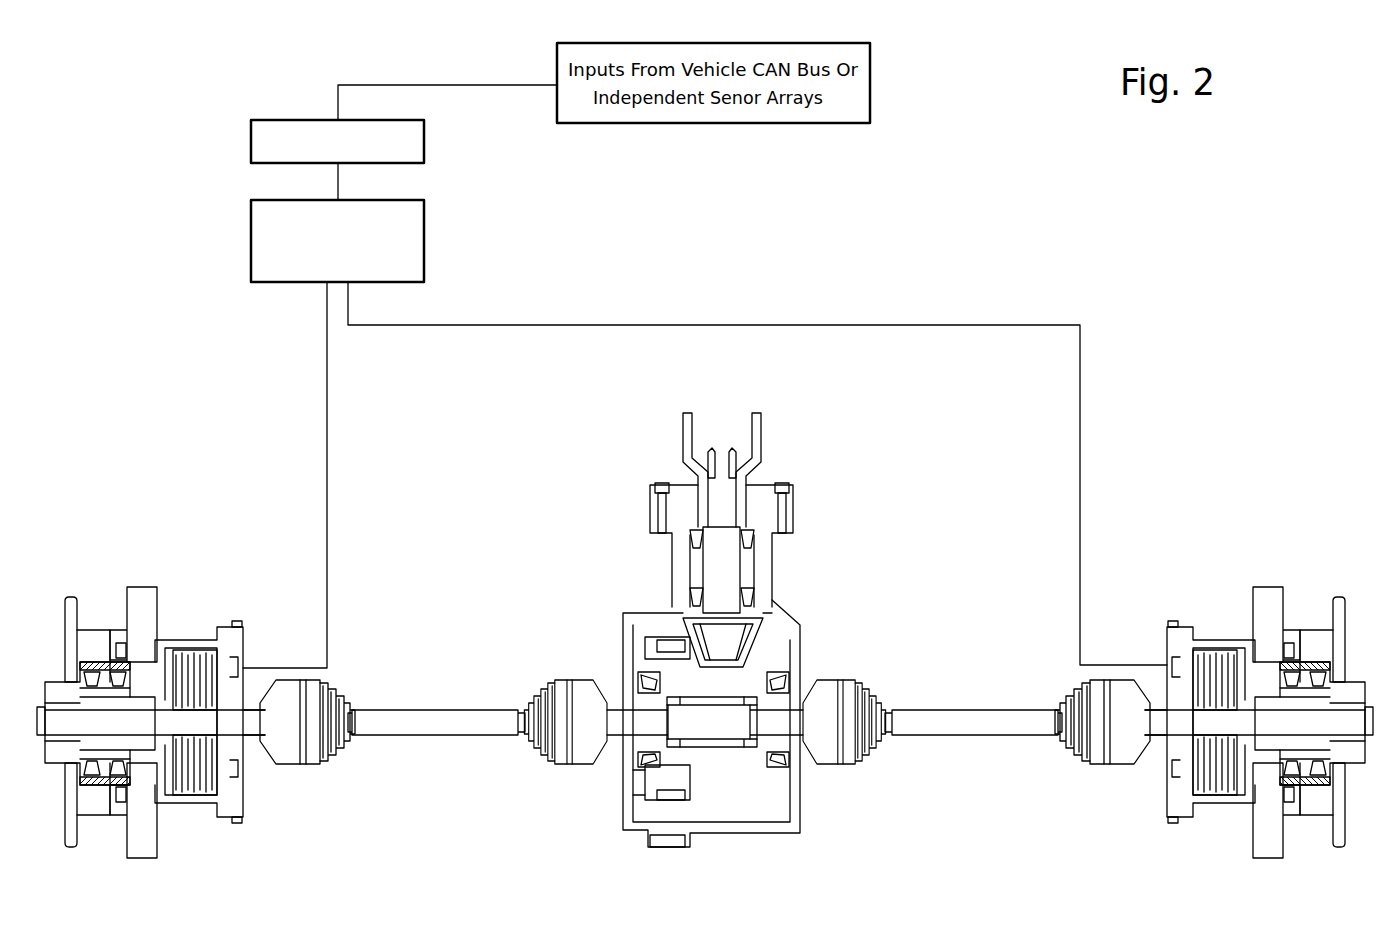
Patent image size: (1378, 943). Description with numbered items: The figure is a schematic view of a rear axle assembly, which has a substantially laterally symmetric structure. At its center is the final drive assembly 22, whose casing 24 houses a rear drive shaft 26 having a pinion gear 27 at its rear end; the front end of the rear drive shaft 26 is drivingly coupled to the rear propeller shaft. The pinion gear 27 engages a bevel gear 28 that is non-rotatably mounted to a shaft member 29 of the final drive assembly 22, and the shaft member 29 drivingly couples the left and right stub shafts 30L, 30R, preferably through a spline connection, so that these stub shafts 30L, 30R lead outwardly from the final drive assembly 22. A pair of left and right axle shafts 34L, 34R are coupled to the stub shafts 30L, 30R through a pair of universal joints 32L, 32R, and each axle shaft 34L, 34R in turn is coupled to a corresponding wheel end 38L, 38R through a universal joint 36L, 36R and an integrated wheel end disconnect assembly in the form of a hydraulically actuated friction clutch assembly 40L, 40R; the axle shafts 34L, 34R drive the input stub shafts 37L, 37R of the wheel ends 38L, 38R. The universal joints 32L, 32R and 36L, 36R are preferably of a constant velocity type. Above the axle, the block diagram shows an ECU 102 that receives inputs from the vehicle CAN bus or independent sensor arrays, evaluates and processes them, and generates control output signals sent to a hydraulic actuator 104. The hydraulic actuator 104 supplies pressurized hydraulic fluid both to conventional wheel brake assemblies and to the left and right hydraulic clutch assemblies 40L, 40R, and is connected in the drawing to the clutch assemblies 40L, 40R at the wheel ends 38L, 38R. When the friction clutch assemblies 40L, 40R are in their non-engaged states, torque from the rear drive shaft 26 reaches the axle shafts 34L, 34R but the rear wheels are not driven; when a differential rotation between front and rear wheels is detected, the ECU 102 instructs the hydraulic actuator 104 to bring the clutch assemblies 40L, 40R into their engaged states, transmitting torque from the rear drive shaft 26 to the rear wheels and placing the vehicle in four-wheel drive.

The final drive assembly 22 is at (793, 593).
The casing 24 is at (790, 828).
The rear drive shaft 26 is at (720, 565).
The pinion gear 27 is at (742, 640).
The bevel gear 28 is at (648, 800).
The shaft member 29 is at (736, 748).
The left stub shaft 30L is at (620, 724).
The right stub shaft 30R is at (790, 722).
The left universal joint 32L is at (545, 770).
The right universal joint 32R is at (860, 673).
The left axle shaft 34L is at (440, 714).
The right axle shaft 34R is at (972, 714).
The left universal joint 36L is at (317, 772).
The right universal joint 36R is at (1093, 772).
The left input stub shaft 37L is at (247, 725).
The right input stub shaft 37R is at (1163, 725).
The left wheel end 38L is at (99, 610).
The right wheel end 38R is at (1308, 605).
The left hydraulically actuated friction clutch assembly 40L is at (190, 631).
The right hydraulically actuated friction clutch assembly 40R is at (1223, 630).
The ECU 102 is at (424, 141).
The hydraulic actuator 104 is at (424, 240).